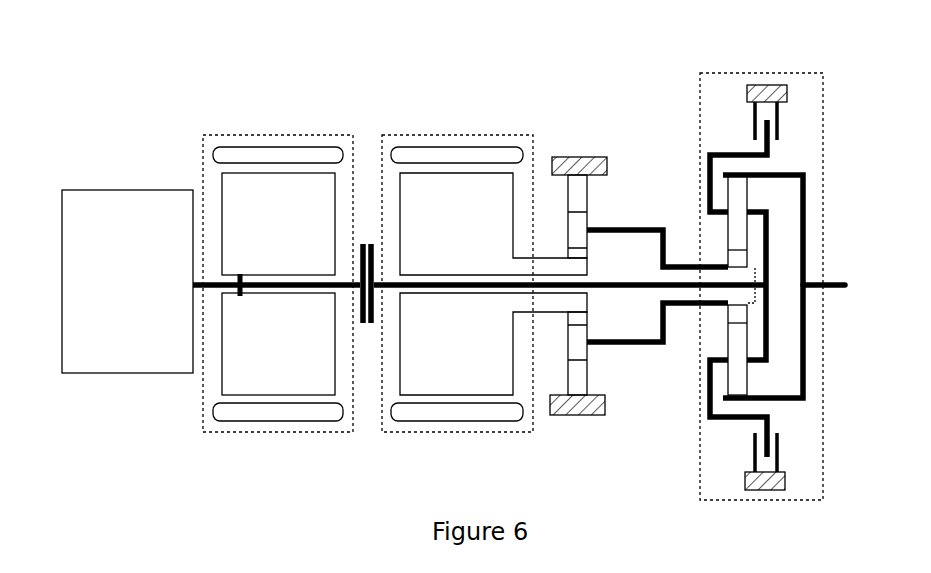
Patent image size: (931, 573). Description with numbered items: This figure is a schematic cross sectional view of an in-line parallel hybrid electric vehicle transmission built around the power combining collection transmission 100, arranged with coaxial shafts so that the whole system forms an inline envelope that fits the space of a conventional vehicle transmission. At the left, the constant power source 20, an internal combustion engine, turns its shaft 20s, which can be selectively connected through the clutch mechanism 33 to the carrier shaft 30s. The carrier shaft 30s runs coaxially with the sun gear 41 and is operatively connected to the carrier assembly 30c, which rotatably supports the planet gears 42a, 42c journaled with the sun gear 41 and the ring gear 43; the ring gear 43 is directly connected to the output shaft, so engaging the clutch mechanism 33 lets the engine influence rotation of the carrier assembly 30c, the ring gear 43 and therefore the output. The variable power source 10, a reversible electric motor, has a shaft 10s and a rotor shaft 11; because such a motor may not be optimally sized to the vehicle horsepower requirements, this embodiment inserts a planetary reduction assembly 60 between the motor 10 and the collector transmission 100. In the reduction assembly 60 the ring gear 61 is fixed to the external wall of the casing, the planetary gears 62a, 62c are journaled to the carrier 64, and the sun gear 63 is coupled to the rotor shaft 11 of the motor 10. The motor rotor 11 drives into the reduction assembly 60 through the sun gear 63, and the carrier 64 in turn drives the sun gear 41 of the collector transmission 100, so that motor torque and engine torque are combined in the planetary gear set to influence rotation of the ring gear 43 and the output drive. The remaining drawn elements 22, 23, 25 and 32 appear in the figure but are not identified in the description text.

The constant power source 20 is at (137, 190).
The shaft of constant power source 20s is at (256, 283).
The first planetary gear set 22 is at (306, 135).
The gear carrier of first gear set 23 is at (288, 173).
The gear of first gear set 25 is at (230, 152).
The clutch mechanism 33 is at (372, 332).
The carrier shaft 30s is at (486, 288).
The variable power source 10 is at (477, 137).
The rotor shaft of motor 11 is at (438, 173).
The shaft of variable power source 10s is at (552, 257).
The planetary reduction assembly 60 is at (595, 245).
The ring gear of reduction assembly 61 is at (598, 192).
The planetary gear of reduction assembly 62a is at (588, 222).
The planetary gear of reduction assembly 62c is at (588, 352).
The carrier of reduction assembly 64 is at (628, 229).
The sun gear of reduction assembly 63 is at (588, 323).
The power combining collection transmission system 100 is at (738, 73).
The clutch housing 32 is at (757, 73).
The planet gear 42a is at (757, 193).
The planet gear 42c is at (757, 382).
The ring gear 43 is at (813, 230).
The sun gear 41 is at (740, 318).
The carrier assembly 30c is at (775, 277).